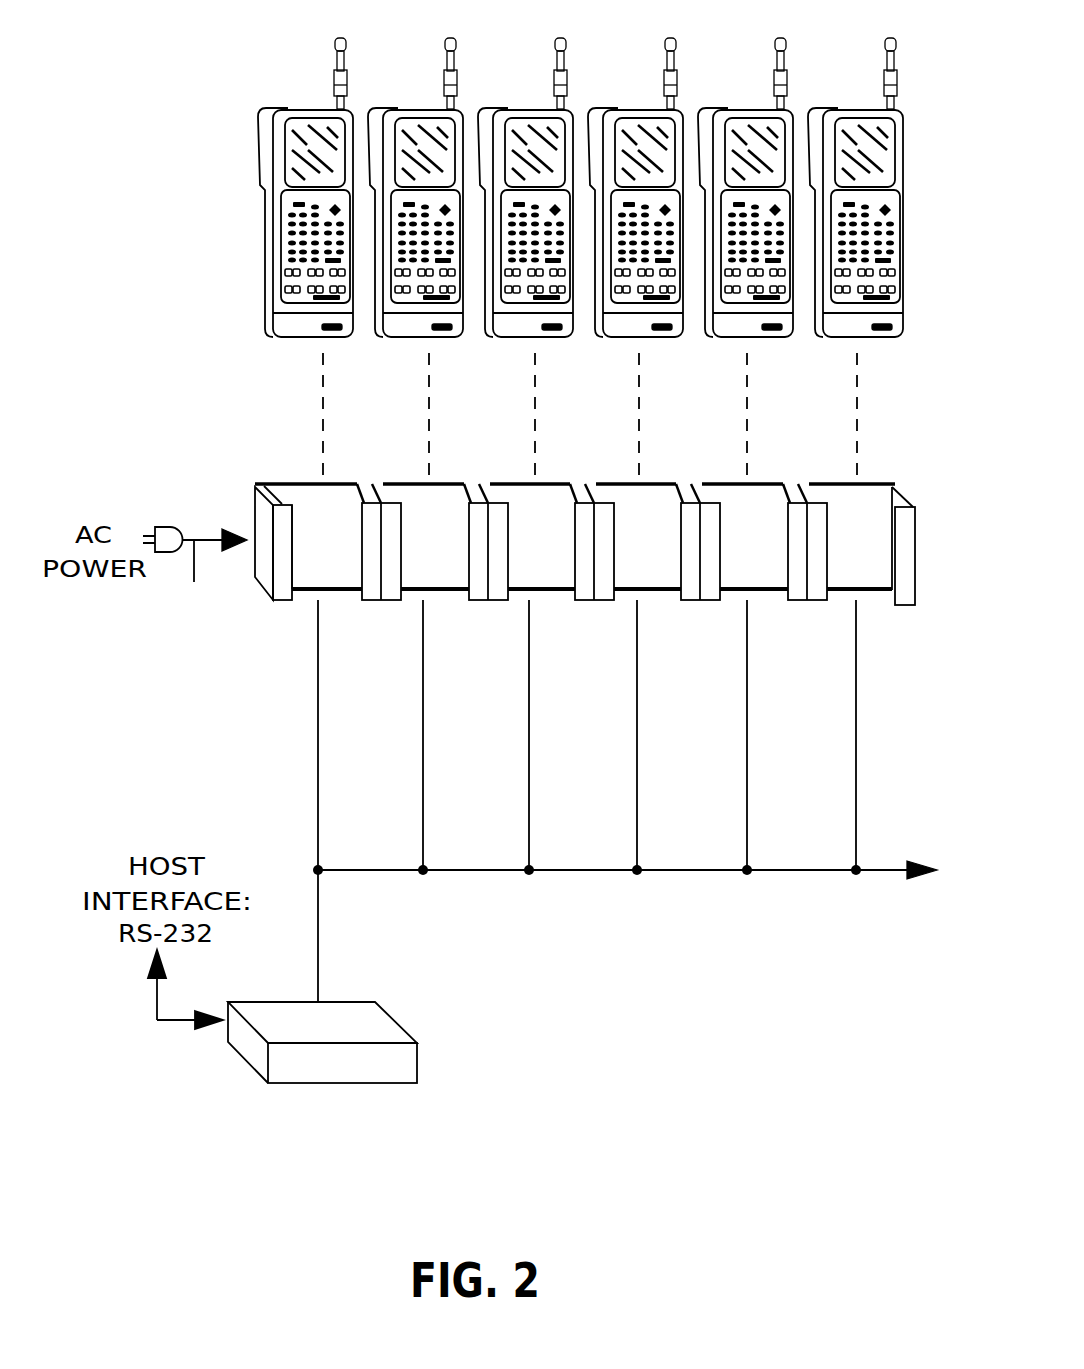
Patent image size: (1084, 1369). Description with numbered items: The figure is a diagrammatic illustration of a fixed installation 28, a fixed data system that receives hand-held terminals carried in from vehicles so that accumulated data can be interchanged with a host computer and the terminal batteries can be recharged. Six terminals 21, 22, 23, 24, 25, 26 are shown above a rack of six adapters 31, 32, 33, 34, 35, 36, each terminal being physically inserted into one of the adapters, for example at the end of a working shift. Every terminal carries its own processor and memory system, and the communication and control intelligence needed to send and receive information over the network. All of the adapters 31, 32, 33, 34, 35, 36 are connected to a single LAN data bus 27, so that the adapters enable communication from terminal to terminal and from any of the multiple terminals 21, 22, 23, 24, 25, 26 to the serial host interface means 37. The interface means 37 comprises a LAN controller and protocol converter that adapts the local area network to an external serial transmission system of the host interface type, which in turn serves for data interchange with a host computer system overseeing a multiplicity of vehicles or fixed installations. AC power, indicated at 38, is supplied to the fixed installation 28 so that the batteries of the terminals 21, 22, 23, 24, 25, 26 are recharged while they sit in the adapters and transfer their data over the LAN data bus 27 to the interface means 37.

The terminal 21 is at (325, 108).
The terminal 22 is at (435, 108).
The terminal 23 is at (545, 108).
The terminal 24 is at (655, 108).
The terminal 25 is at (762, 108).
The terminal 26 is at (875, 108).
The LAN data bus 27 is at (875, 875).
The fixed installation 28 is at (915, 535).
The adapter 31 is at (325, 500).
The adapter 32 is at (430, 500).
The adapter 33 is at (535, 500).
The adapter 34 is at (647, 507).
The adapter 35 is at (747, 507).
The adapter 36 is at (860, 507).
The interface means 37 is at (375, 1002).
The AC power 38 is at (195, 568).